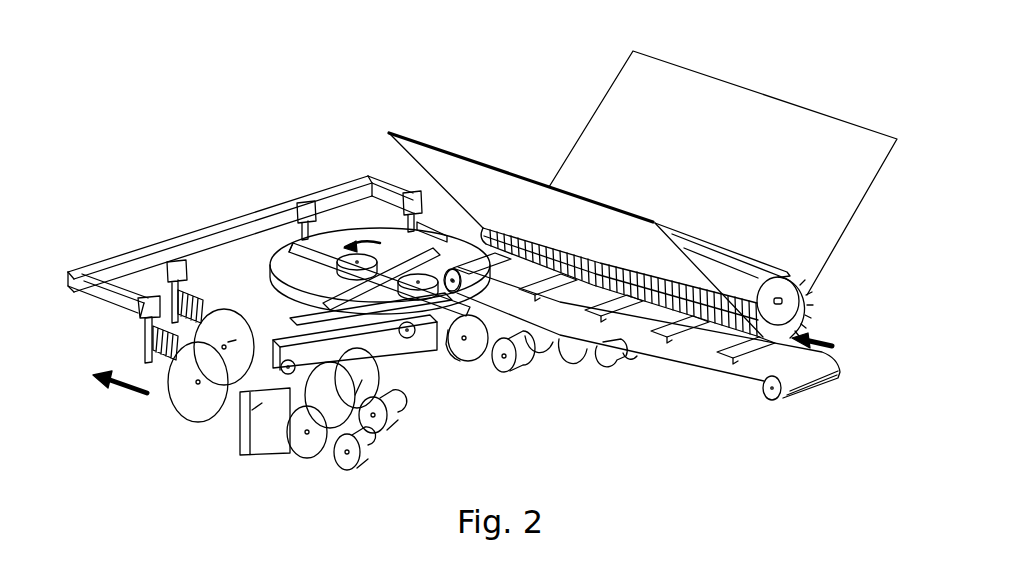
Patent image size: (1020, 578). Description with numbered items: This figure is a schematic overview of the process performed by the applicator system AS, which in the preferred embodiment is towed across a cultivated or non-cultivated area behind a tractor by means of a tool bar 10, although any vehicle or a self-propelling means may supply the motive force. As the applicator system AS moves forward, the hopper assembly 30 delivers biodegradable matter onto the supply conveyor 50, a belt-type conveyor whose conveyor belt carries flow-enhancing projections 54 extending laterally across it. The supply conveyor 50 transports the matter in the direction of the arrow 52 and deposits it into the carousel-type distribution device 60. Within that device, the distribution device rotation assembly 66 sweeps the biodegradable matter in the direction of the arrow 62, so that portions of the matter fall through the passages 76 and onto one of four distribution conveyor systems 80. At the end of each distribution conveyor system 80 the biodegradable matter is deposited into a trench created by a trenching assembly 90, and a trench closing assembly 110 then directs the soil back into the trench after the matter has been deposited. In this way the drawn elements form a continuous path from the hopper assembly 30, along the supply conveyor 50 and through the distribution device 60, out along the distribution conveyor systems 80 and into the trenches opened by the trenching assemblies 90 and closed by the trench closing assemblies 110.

The applicator system AS is at (395, 90).
The tool bar 10 is at (206, 232).
The hopper assembly 30 is at (817, 138).
The supply conveyor 50 is at (681, 335).
The arrow 52 is at (822, 338).
The flow-enhancing projections 54 is at (742, 350).
The distribution device 60 is at (290, 250).
The arrow 62 is at (358, 240).
The distribution device rotation assembly 66 is at (338, 272).
The passages 76 is at (395, 250).
The distribution conveyor system 80 is at (302, 318).
The trenching assembly 90 is at (246, 434).
The trench closing assembly 110 is at (332, 459).